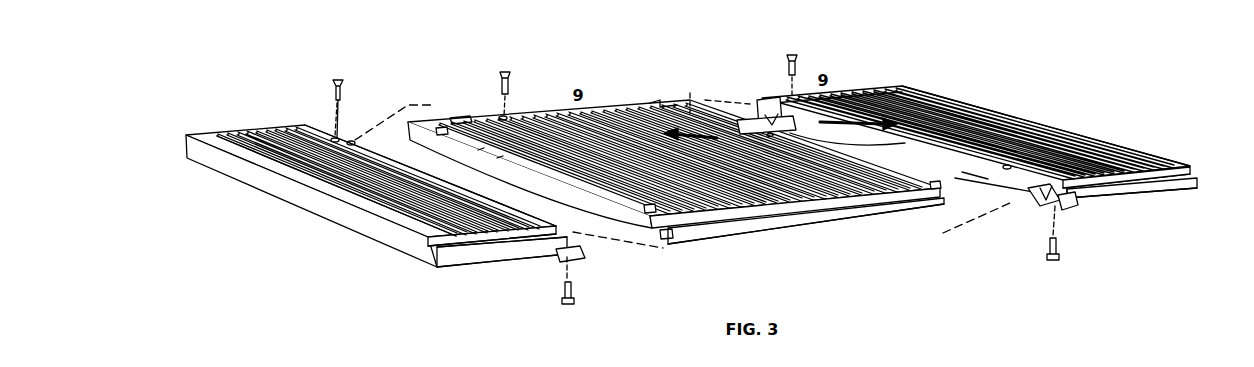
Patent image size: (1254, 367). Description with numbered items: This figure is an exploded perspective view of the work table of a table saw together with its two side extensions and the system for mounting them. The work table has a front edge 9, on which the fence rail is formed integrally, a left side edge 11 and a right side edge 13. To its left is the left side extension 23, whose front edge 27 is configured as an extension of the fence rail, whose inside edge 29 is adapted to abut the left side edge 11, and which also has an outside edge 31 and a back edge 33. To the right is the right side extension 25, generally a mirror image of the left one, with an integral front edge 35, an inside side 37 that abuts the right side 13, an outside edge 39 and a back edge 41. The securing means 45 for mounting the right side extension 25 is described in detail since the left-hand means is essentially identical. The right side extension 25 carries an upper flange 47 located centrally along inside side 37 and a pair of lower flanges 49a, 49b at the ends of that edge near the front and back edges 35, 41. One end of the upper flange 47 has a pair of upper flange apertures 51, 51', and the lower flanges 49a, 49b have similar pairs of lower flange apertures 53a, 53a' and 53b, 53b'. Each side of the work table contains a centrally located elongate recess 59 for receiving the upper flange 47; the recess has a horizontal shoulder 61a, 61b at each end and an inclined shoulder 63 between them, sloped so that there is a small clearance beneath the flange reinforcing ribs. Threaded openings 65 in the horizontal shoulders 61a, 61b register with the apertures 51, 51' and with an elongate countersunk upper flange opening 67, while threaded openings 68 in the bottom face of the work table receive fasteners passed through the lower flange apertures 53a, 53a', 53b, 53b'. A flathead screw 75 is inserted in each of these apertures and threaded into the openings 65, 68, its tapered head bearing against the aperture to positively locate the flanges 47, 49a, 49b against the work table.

The front edge 9 is at (836, 238).
The left side edge 11 is at (588, 212).
The right side edge 13 is at (1003, 128).
The left side extension 23 is at (280, 210).
The right side extension 25 is at (1150, 206).
The front edge 27 is at (478, 260).
The inside edge 29 is at (368, 134).
The outside edge 31 is at (238, 175).
The back edge 33 is at (243, 124).
The front edge 35 is at (1170, 200).
The inside side 37 is at (1000, 194).
The outside edge 39 is at (1127, 143).
The back edge 41 is at (860, 84).
The securing means 45 is at (1052, 264).
The upper flange 47 is at (965, 173).
The lower flange 49a is at (574, 266).
The lower flange 49b is at (740, 122).
The upper flange aperture 51 is at (314, 111).
The upper flange aperture 51' is at (365, 102).
The lower flange aperture 53a is at (1027, 208).
The lower flange aperture 53a' is at (840, 250).
The lower flange aperture 53b is at (764, 106).
The lower flange aperture 53b' is at (841, 86).
The elongate recess 59 is at (480, 148).
The horizontal shoulder 61a is at (666, 238).
The horizontal shoulder 61b is at (458, 118).
The inclined shoulder 63 is at (499, 157).
The threaded opening 65 is at (440, 127).
The upper flange opening 67 is at (528, 225).
The threaded opening 68 is at (938, 223).
The flathead screw 75 is at (336, 82).